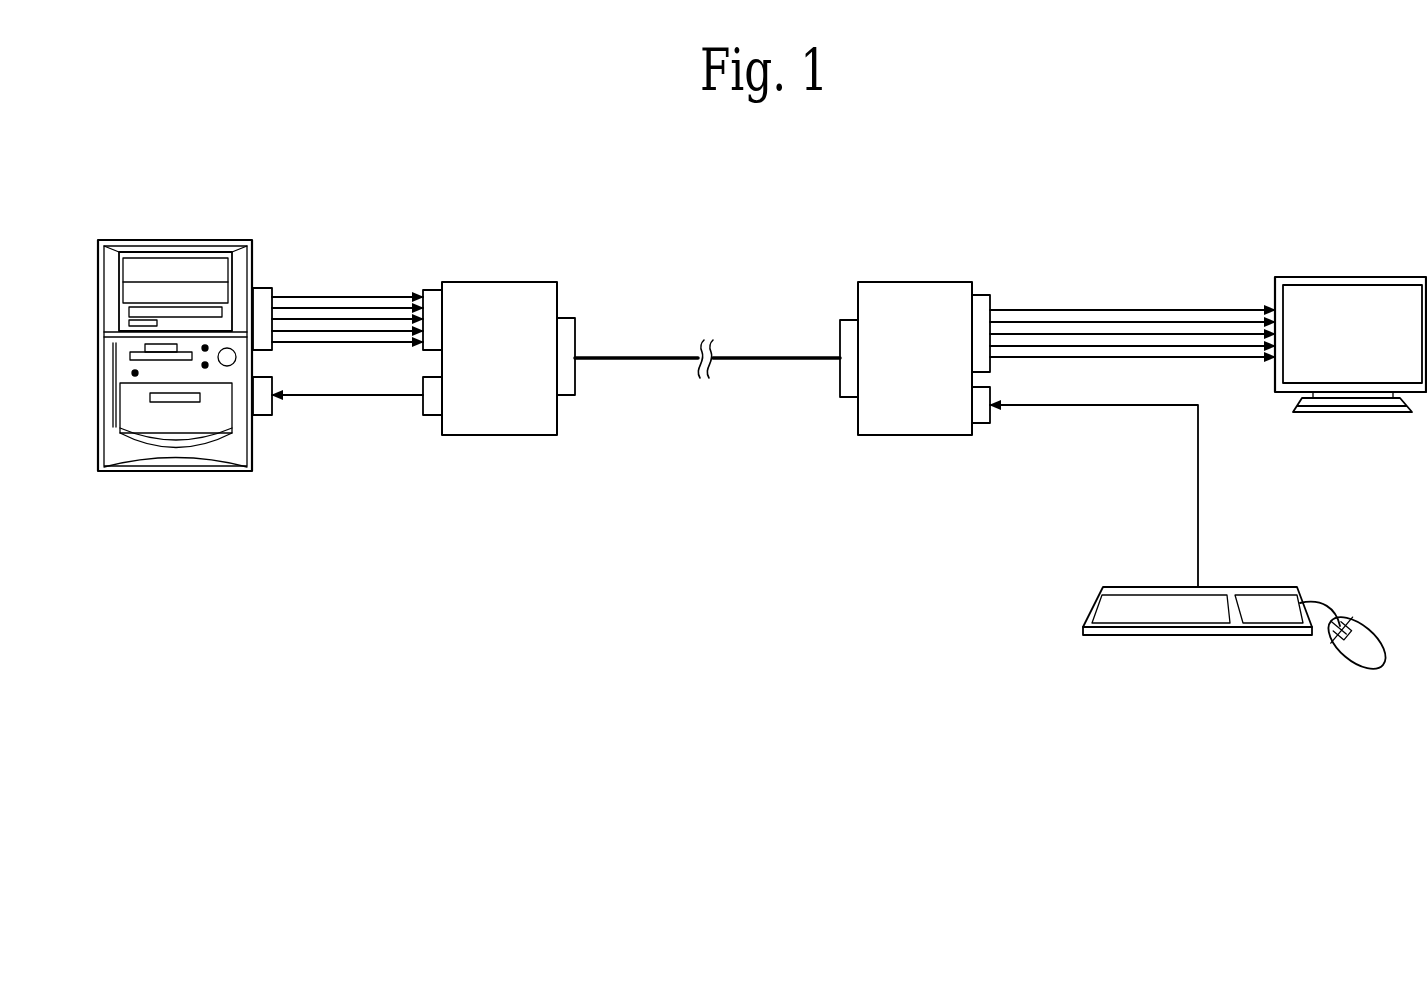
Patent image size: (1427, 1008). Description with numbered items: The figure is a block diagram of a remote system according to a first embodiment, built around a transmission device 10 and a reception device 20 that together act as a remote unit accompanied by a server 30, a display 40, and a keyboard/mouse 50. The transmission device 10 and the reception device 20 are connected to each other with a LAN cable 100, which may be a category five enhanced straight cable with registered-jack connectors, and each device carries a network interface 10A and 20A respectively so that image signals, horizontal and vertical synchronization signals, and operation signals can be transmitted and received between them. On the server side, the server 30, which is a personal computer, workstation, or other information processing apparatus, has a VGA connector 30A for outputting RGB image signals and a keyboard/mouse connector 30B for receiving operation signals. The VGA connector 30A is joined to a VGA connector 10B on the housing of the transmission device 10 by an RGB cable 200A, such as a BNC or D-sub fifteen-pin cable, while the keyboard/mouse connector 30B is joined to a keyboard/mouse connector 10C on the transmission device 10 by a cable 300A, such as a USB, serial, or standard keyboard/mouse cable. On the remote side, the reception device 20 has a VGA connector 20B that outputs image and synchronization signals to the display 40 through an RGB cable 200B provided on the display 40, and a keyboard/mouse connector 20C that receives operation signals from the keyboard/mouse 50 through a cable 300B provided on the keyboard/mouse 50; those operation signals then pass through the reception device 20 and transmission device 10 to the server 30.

The transmission device 10 is at (502, 435).
The network interface 10A is at (567, 318).
The VGA connector 10B is at (430, 290).
The keyboard/mouse connector 10C is at (428, 417).
The reception device 20 is at (918, 282).
The network interface 20A is at (847, 398).
The VGA connector 20B is at (985, 295).
The keyboard/mouse connector 20C is at (978, 425).
The server 30 is at (173, 240).
The VGA connector 30A is at (257, 288).
The keyboard/mouse connector 30B is at (266, 415).
The display 40 is at (1348, 277).
The keyboard/mouse 50 is at (1198, 637).
The LAN cable 100 is at (670, 360).
The RGB cable 200A is at (340, 353).
The RGB cable 200B is at (1117, 370).
The cable 300A is at (353, 400).
The cable 300B is at (1199, 445).